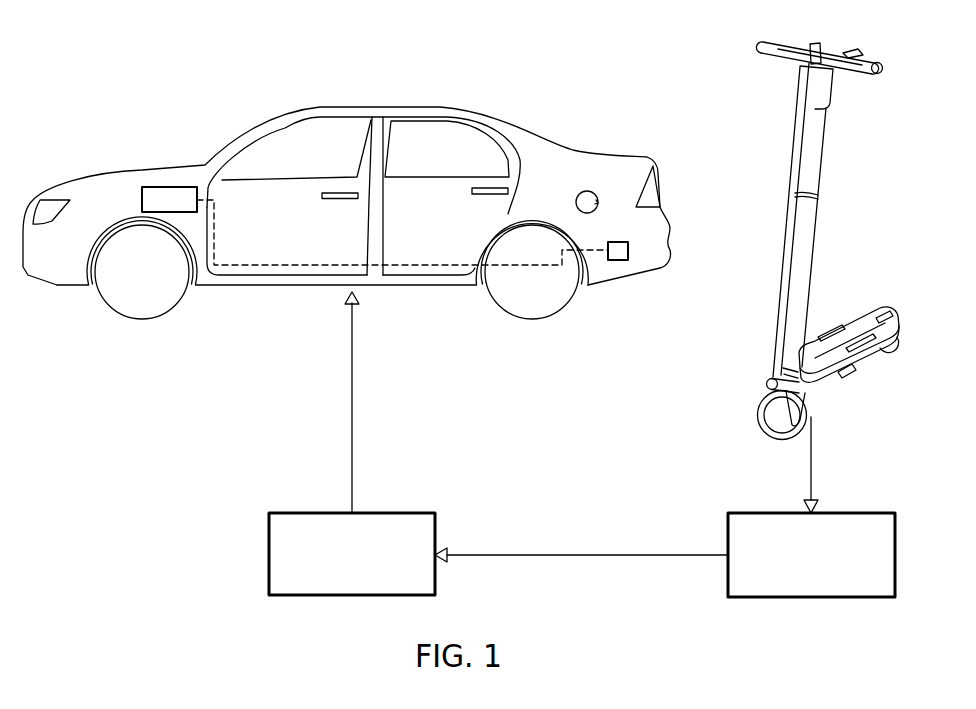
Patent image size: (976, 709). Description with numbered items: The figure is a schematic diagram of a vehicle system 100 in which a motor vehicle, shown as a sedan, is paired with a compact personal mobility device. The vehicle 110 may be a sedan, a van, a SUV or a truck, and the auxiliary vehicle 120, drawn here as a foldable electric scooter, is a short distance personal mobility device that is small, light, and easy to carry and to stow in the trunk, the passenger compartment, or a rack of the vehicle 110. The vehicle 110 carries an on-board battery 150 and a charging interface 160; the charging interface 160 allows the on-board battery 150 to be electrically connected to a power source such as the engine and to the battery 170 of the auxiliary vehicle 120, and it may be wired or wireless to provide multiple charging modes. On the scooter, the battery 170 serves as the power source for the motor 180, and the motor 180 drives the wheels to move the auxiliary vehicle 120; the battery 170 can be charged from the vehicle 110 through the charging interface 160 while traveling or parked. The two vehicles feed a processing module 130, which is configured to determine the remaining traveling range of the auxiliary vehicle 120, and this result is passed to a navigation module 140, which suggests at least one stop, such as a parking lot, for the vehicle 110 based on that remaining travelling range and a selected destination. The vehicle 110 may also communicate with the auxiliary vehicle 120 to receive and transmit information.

The vehicle system 100 is at (514, 53).
The vehicle 110 is at (270, 132).
The auxiliary vehicle 120 is at (800, 150).
The processing module 130 is at (838, 513).
The navigation module 140 is at (380, 513).
The on-board battery 150 is at (172, 187).
The charging interface 160 is at (628, 248).
The battery 170 is at (851, 371).
The motor 180 is at (851, 50).